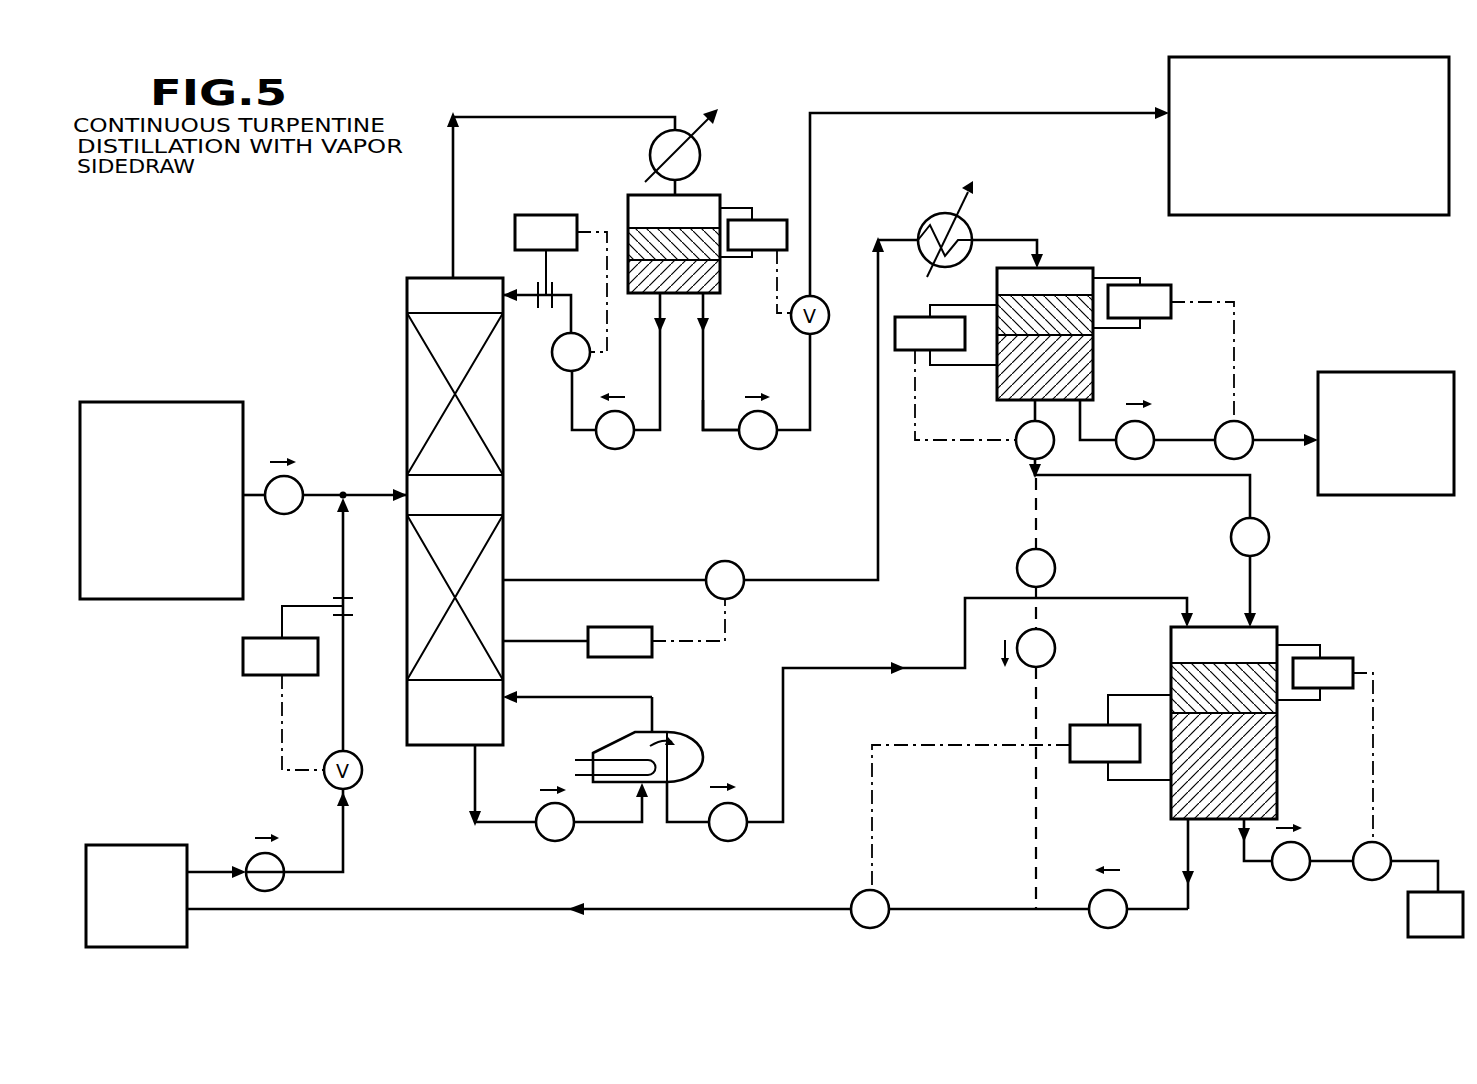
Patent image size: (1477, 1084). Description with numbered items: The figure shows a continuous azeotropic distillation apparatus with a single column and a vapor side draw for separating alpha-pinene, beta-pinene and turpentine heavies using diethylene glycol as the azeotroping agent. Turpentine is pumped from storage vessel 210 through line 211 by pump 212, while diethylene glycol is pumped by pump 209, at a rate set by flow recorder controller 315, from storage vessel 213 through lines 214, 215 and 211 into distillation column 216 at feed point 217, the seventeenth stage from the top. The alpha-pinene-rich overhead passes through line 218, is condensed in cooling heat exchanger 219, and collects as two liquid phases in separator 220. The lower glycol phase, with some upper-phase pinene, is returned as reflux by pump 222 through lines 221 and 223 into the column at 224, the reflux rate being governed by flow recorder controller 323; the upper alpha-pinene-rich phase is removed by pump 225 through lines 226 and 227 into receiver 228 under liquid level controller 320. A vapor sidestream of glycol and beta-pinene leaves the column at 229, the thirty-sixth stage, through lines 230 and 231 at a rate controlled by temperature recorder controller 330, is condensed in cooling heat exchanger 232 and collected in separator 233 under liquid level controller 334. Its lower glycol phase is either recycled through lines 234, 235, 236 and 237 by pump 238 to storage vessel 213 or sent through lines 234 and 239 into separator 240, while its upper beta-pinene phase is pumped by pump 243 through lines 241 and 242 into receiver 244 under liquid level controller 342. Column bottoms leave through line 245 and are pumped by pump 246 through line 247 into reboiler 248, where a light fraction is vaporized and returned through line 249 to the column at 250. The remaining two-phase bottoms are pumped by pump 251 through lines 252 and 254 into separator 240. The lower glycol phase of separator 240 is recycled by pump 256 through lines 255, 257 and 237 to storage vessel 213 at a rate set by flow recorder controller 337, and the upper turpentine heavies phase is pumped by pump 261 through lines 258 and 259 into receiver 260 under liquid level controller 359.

The pump 209 is at (273, 882).
The storage vessel 210 is at (140, 410).
The line 211 is at (362, 492).
The pump 212 is at (283, 514).
The storage vessel 213 is at (122, 856).
The line 214 is at (193, 868).
The line 215 is at (343, 632).
The distillation column 216 is at (407, 366).
The feed point 217 is at (407, 495).
The line 218 is at (503, 116).
The cooling heat exchanger 219 is at (650, 150).
The separator 220 is at (700, 195).
The line 221 is at (663, 360).
The pump 222 is at (617, 450).
The line 223 is at (555, 330).
The reflux entry point 224 is at (500, 292).
The pump 225 is at (772, 445).
The line 226 is at (703, 440).
The line 227 is at (987, 112).
The receiver 228 is at (1361, 204).
The vapor sidestream draw point 229 is at (503, 572).
The line 230 is at (612, 580).
The line 231 is at (798, 580).
The cooling heat exchanger 232 is at (934, 215).
The separator 233 is at (1067, 268).
The line 234 is at (1033, 412).
The line 235 is at (1030, 538).
The line 236 is at (1030, 830).
The line 237 is at (728, 914).
The pump 238 is at (1055, 648).
The line 239 is at (1255, 578).
The separator 240 is at (1270, 626).
The line 241 is at (1080, 444).
The line 242 is at (1182, 426).
The pump 243 is at (1133, 460).
The receiver 244 is at (1368, 385).
The line 245 is at (470, 794).
The pump 246 is at (542, 835).
The line 247 is at (600, 822).
The reboiler 248 is at (665, 785).
The line 249 is at (590, 700).
The reboiler return point 250 is at (506, 694).
The pump 251 is at (740, 838).
The line 252 is at (698, 828).
The line 254 is at (772, 830).
The line 255 is at (1190, 898).
The pump 256 is at (1116, 926).
The line 257 is at (1042, 916).
The line 258 is at (1240, 876).
The line 259 is at (1332, 863).
The receiver 260 is at (1415, 918).
The pump 261 is at (1290, 880).
The flow recorder controller 315 is at (243, 657).
The liquid level controller 320 is at (767, 219).
The flow recorder controller 323 is at (553, 220).
The temperature recorder controller 330 is at (590, 627).
The liquid level controller 334 is at (908, 318).
The flow recorder controller 337 is at (1085, 763).
The liquid level controller 342 is at (1157, 286).
The liquid level controller 359 is at (1347, 658).